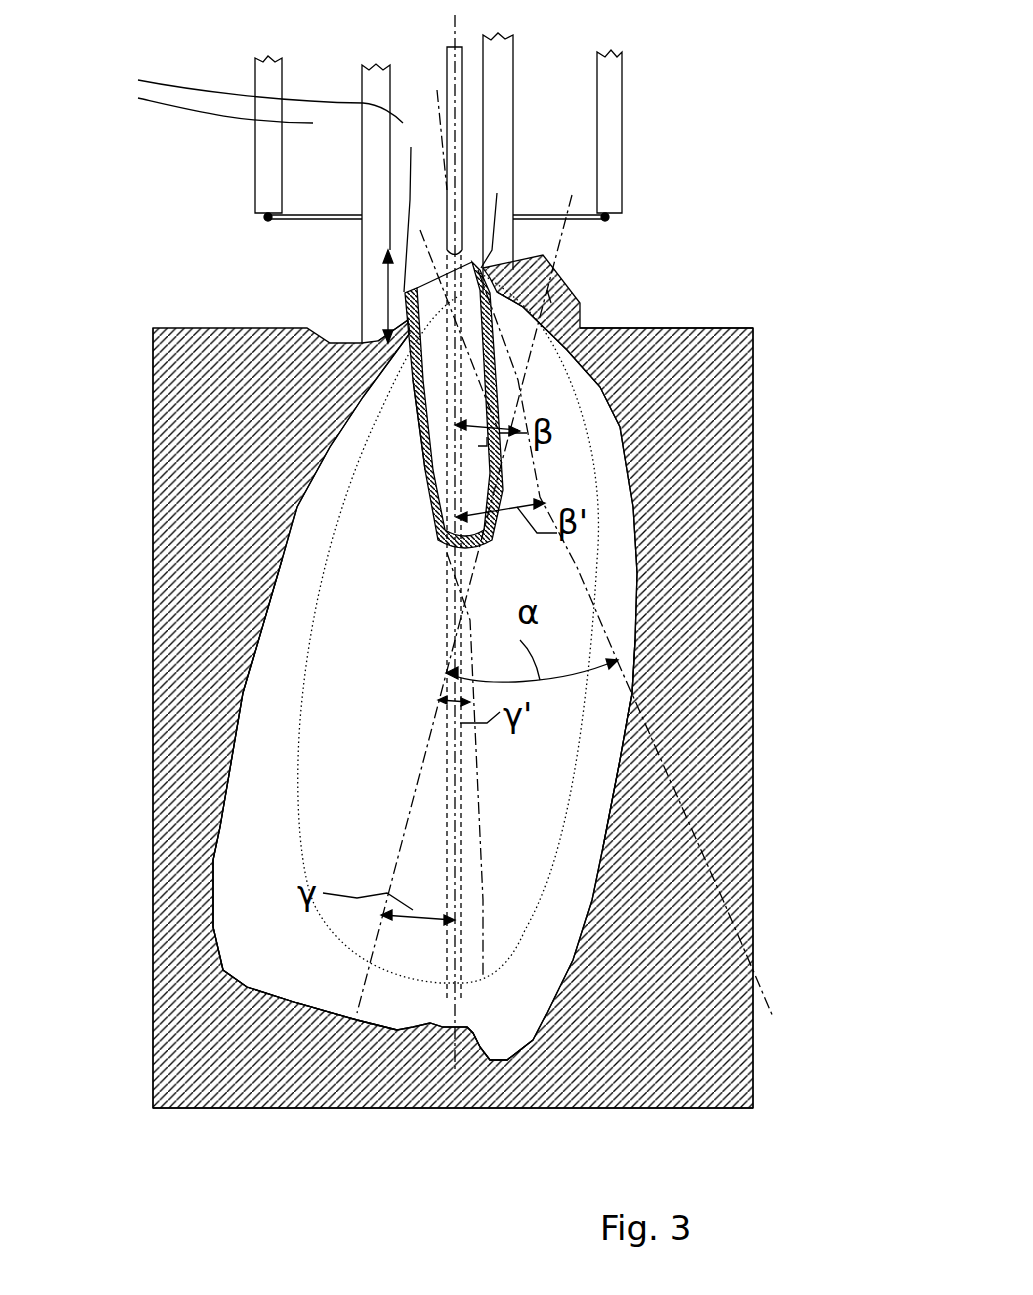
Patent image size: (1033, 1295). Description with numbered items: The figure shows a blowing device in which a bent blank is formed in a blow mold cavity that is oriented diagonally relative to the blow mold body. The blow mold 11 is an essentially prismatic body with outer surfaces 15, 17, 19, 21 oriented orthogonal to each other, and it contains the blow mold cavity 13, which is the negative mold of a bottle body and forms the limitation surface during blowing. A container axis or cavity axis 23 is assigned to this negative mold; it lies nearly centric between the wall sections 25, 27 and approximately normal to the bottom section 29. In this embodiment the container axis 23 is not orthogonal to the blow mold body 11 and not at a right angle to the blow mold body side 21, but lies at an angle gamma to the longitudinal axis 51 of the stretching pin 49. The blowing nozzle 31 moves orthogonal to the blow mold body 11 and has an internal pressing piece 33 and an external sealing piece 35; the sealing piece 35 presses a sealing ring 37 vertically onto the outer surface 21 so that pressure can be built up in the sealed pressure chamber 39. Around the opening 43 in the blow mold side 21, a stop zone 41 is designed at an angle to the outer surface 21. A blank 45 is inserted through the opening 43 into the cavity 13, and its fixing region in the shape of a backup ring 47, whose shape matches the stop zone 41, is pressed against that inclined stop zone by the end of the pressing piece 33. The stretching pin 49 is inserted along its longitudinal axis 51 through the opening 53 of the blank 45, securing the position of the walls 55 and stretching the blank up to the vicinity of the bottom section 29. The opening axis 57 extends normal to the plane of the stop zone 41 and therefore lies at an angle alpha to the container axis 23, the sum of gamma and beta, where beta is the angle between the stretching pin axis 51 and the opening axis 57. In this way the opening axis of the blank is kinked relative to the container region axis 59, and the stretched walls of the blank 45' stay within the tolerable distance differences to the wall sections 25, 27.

The blow mold 11 is at (757, 877).
The blow mold cavity 13 is at (605, 723).
The outer surface 15 is at (757, 767).
The outer surface 17 is at (517, 1113).
The outer surface 19 is at (150, 797).
The outer surface 21 is at (708, 328).
The container axis 23 is at (397, 843).
The wall section 25 is at (230, 760).
The wall section 27 is at (617, 780).
The bottom section 29 is at (490, 1057).
The blowing nozzle 31 is at (676, 153).
The pressing piece 33 is at (517, 78).
The sealing piece 35 is at (622, 107).
The sealing ring 37 is at (605, 222).
The pressure chamber 39 is at (236, 199).
The stop zone 41 is at (383, 307).
The opening 43 is at (380, 248).
The blank 45 is at (388, 467).
The blank 45' is at (502, 766).
The backup ring 47 is at (497, 193).
The stretching pin 49 is at (447, 77).
The longitudinal axis 51 is at (450, 750).
The opening 53 is at (411, 147).
The wall 55 is at (497, 373).
The opening axis 57 is at (583, 563).
The container region axis 59 is at (485, 853).